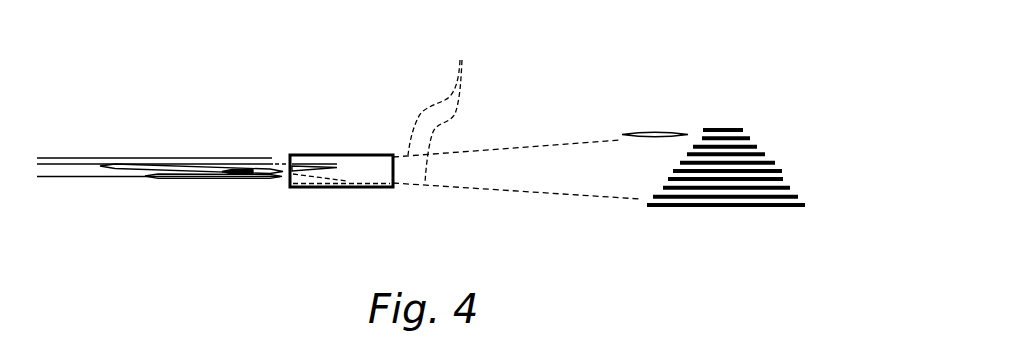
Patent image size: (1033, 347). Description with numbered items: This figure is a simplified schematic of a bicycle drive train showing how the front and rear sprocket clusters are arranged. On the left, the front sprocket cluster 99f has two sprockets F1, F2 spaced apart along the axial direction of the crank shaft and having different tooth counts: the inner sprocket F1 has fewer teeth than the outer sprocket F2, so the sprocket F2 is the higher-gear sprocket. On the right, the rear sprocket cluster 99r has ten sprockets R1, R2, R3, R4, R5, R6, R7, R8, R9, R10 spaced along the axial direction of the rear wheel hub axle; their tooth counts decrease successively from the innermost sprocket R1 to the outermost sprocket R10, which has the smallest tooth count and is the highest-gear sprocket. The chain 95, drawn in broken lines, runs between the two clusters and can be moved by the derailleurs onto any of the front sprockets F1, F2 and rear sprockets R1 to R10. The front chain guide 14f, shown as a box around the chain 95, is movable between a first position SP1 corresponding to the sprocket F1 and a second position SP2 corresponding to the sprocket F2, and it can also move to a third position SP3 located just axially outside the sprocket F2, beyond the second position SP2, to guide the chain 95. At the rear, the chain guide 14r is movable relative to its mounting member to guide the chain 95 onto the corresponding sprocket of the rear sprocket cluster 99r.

The third position SP3 is at (48, 157).
The second position SP2 is at (97, 165).
The first position SP1 is at (78, 176).
The sprocket F2 is at (163, 163).
The sprocket F1 is at (212, 178).
The front sprocket cluster 99f is at (254, 130).
The chain guide 14f is at (342, 158).
The chain 95 is at (440, 109).
The chain guide 14r is at (647, 131).
The rear sprocket cluster 99r is at (727, 88).
The sprocket R1 is at (647, 205).
The sprocket R2 is at (653, 196).
The sprocket R3 is at (663, 188).
The sprocket R4 is at (667, 178).
The sprocket R5 is at (673, 172).
The sprocket R6 is at (775, 163).
The sprocket R7 is at (765, 154).
The sprocket R8 is at (757, 146).
The sprocket R9 is at (750, 138).
The sprocket R10 is at (743, 130).